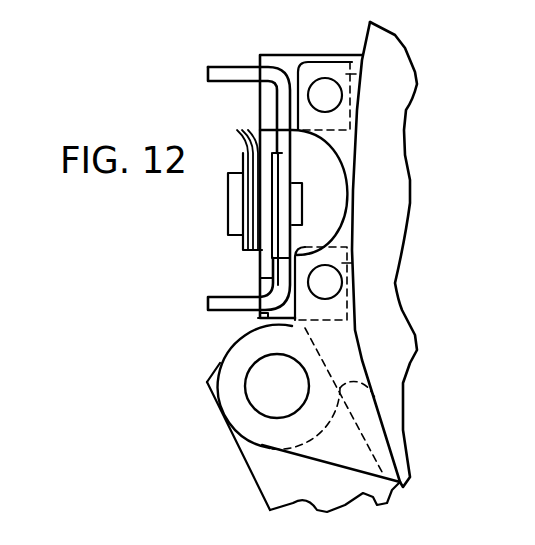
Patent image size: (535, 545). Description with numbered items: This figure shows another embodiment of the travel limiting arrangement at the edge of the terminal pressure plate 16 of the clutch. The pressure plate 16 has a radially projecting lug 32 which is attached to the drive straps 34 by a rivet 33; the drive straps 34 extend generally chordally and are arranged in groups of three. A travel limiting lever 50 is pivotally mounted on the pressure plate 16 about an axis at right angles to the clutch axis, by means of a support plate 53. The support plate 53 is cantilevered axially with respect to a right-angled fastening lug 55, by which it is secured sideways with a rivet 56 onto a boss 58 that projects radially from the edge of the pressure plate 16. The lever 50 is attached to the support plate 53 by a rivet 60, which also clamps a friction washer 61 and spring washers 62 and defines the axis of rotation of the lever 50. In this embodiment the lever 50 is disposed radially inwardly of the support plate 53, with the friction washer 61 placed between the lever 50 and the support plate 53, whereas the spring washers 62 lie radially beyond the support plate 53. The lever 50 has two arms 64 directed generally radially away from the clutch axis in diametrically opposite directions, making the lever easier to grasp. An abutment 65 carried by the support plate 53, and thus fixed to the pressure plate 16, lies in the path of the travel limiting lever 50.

The terminal pressure plate 16 is at (412, 90).
The lug 32 is at (252, 428).
The rivet 33 is at (250, 388).
The drive strap 34 is at (313, 488).
The travel limiting lever 50 is at (220, 64).
The support plate 53 is at (278, 56).
The fastening lug 55 is at (356, 75).
The rivet 56 is at (328, 82).
The boss 58 is at (313, 67).
The rivet 60 is at (230, 219).
The friction washer 61 is at (272, 249).
The spring washer 62 is at (240, 179).
The arm 64 is at (211, 81).
The abutment 65 is at (258, 316).